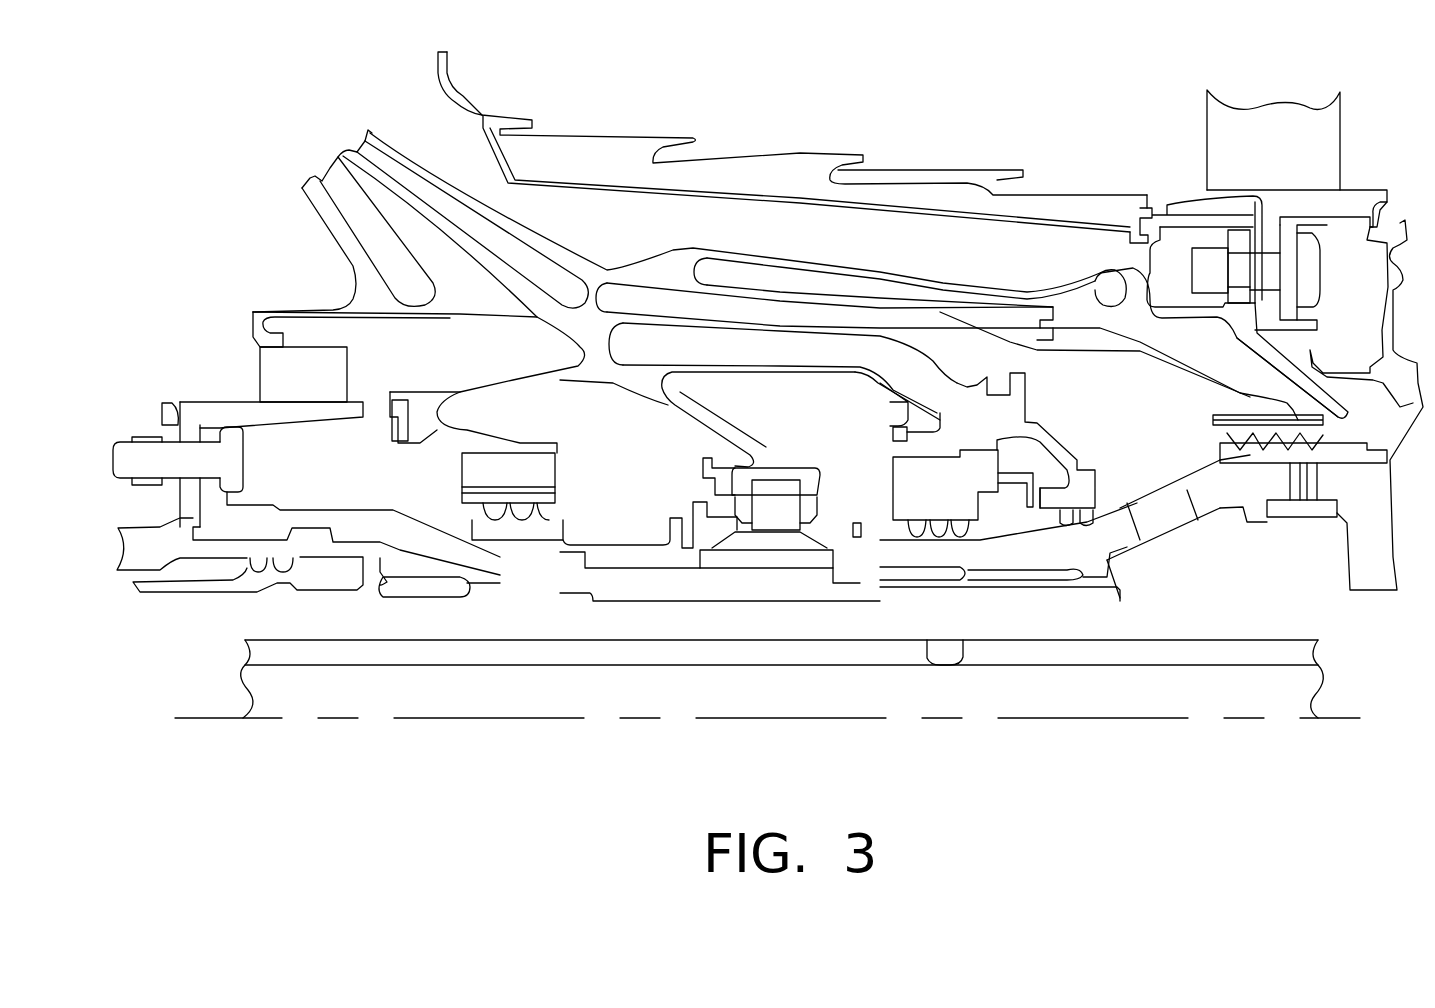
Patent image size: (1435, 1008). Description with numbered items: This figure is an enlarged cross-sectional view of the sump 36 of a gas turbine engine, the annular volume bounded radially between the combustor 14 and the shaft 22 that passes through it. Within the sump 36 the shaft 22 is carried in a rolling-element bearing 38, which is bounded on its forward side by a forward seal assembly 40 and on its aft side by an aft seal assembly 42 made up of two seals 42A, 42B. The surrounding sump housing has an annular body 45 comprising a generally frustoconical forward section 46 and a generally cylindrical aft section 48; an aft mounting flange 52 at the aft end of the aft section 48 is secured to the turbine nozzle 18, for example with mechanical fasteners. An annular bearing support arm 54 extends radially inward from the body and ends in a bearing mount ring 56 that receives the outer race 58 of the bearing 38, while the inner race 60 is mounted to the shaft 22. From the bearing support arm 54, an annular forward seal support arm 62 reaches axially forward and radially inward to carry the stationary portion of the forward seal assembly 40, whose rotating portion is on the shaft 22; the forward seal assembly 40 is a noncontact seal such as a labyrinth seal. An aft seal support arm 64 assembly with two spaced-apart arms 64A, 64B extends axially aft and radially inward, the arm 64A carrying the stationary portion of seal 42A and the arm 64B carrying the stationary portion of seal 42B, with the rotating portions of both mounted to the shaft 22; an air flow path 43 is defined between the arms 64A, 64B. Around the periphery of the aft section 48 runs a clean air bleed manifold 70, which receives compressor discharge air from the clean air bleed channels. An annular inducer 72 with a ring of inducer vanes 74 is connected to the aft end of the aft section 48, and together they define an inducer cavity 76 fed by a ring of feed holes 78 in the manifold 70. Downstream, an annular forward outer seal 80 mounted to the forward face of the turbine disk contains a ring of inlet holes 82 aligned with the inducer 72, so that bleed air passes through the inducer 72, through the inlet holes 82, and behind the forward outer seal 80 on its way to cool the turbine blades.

The combustor 14 is at (806, 101).
The turbine nozzle 18 is at (1283, 144).
The shaft 22 is at (600, 540).
The sump 36 is at (303, 471).
The rolling-element bearing 38 is at (793, 517).
The forward seal assembly 40 is at (436, 481).
The aft seal assembly 42 is at (1053, 432).
The seal 42A is at (923, 497).
The seal 42B is at (1083, 480).
The air flow path 43 is at (897, 363).
The annular body 45 is at (355, 318).
The forward section 46 is at (305, 263).
The aft section 48 is at (737, 250).
The aft mounting flange 52 is at (1255, 272).
The bearing support arm 54 is at (675, 403).
The bearing mount ring 56 is at (837, 473).
The outer race 58 is at (780, 477).
The inner race 60 is at (777, 540).
The forward seal support arm 62 is at (500, 385).
The aft seal support arm 64 is at (792, 375).
The arm 64A is at (862, 372).
The arm 64B is at (915, 352).
The clean air bleed manifold 70 is at (858, 282).
The inducer 72 is at (1113, 338).
The inducer vanes 74 is at (1217, 362).
The inducer cavity 76 is at (1203, 347).
The feed holes 78 is at (1092, 307).
The forward outer seal 80 is at (1387, 330).
The inlet holes 82 is at (1350, 450).